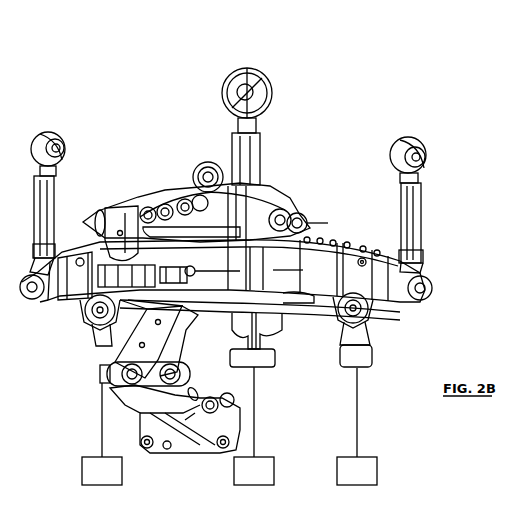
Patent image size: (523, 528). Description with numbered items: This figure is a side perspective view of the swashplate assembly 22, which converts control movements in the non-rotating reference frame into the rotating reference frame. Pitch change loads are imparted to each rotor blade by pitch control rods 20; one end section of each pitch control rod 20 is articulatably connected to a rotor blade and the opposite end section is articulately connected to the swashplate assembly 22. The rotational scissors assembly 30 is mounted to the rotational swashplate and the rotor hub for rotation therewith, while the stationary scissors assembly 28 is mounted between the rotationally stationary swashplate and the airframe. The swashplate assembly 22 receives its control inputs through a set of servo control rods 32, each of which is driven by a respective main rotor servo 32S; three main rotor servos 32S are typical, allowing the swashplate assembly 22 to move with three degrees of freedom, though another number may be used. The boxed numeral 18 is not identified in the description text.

The rod end 18 is at (48, 131).
The pitch control rod 20 is at (56, 199).
The swashplate assembly 22 is at (470, 290).
The stationary scissors assembly 28 is at (183, 450).
The rotational scissors assembly 30 is at (280, 202).
The servo control rod 32 is at (100, 428).
The main rotor servo 32S is at (123, 472).